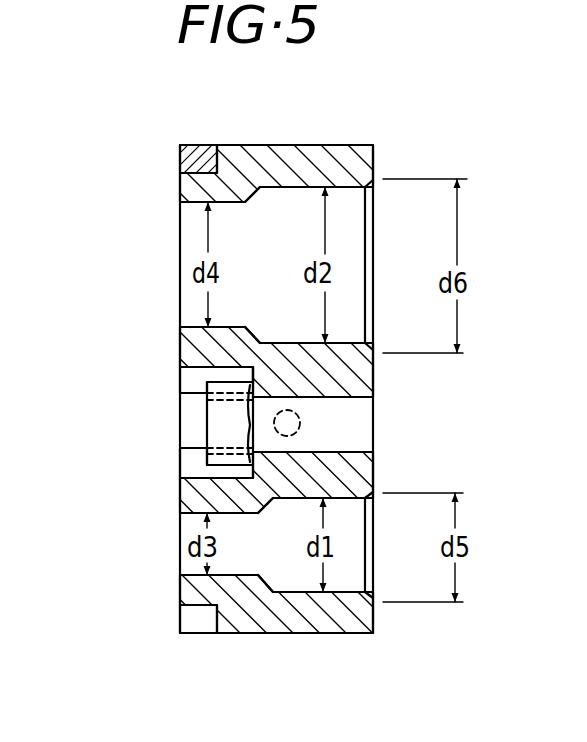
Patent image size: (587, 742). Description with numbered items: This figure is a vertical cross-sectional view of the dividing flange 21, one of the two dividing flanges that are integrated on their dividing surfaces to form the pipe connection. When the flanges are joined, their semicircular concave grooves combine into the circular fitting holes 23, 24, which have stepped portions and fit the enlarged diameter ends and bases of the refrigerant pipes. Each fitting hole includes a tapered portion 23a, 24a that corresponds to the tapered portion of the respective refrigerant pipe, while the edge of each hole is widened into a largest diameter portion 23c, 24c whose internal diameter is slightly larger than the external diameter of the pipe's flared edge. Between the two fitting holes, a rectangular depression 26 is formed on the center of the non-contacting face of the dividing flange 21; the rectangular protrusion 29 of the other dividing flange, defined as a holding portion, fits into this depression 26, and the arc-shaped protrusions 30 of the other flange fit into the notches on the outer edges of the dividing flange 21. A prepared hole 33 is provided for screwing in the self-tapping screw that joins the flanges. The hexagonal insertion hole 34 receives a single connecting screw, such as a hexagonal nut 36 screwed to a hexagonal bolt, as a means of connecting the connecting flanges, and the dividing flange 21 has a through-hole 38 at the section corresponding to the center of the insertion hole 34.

The dividing flange 21 is at (297, 633).
The fitting hole 23 is at (355, 548).
The tapered portion 23a is at (272, 502).
The largest diameter portion 23c is at (373, 600).
The fitting hole 24 is at (350, 253).
The tapered portion 24a is at (263, 190).
The largest diameter portion 24c is at (373, 348).
The rectangular depression 26 is at (180, 467).
The rectangular protrusion 29 is at (180, 378).
The arc-shaped protrusion 30 is at (210, 145).
The prepared hole 33 is at (300, 418).
The hexagonal insertion hole 34 is at (207, 448).
The hexagonal nut 36 is at (200, 428).
The through-hole 38 is at (373, 437).